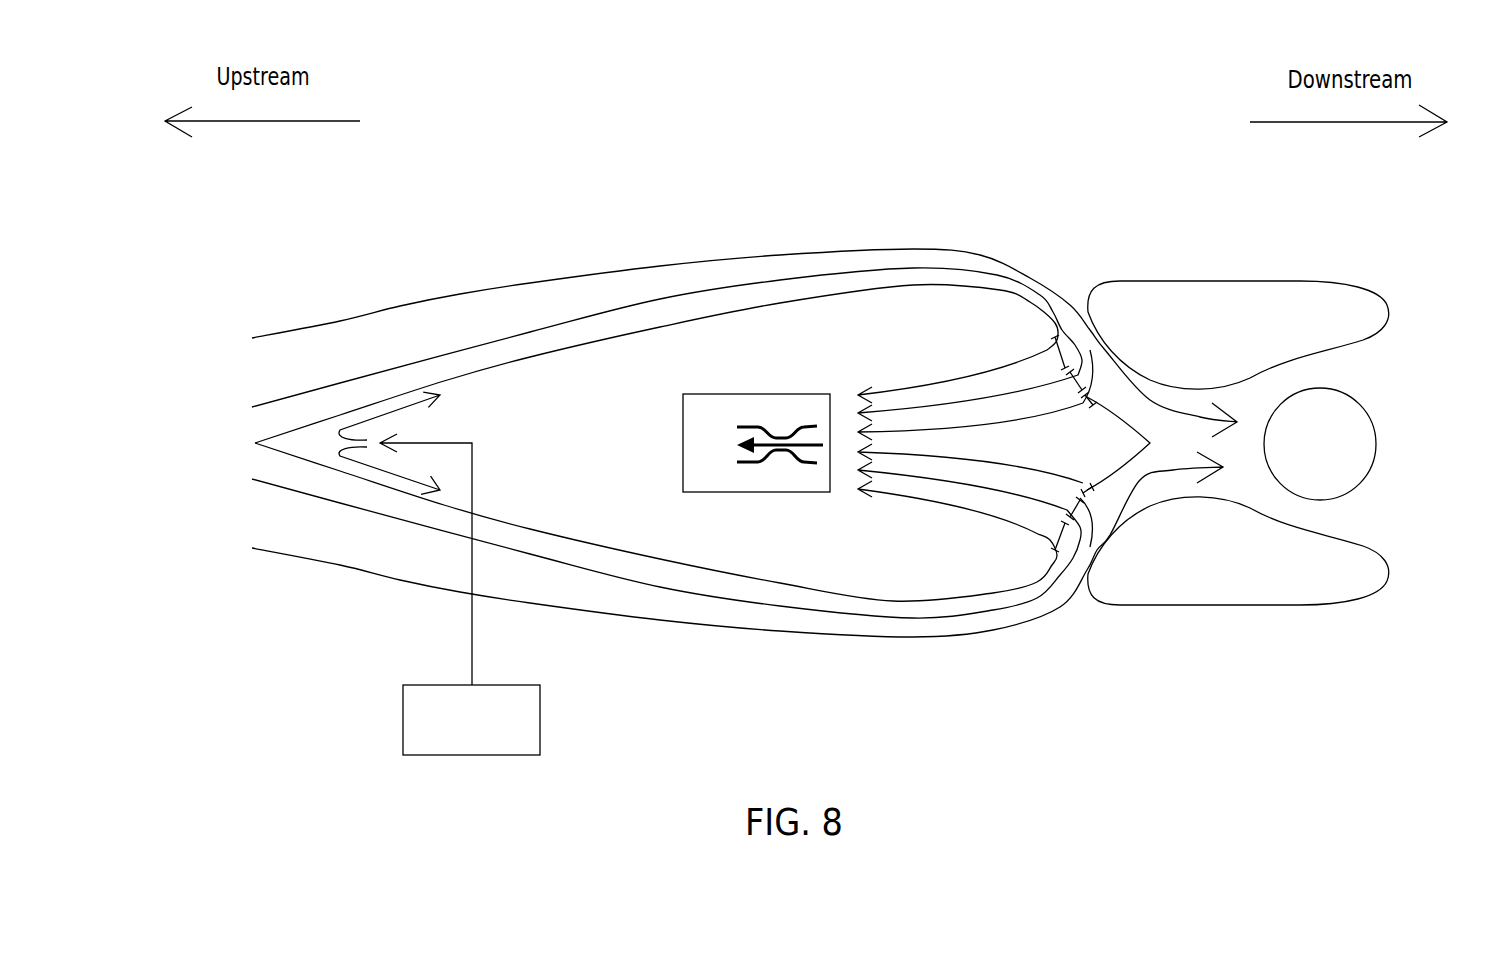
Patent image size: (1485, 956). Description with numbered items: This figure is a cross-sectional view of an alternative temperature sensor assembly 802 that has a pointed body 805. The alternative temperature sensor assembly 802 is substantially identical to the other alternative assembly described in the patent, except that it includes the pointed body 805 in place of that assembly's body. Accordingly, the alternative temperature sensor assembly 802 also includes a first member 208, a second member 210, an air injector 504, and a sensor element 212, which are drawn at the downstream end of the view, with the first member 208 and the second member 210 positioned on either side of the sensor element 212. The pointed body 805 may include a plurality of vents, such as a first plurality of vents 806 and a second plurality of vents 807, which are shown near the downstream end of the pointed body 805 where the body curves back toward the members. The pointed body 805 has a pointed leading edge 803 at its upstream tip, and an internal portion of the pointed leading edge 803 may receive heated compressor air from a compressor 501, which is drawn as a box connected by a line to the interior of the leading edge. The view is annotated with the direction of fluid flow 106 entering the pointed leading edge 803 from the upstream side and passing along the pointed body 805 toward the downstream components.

The alternative temperature sensor assembly 802 is at (1018, 112).
The pointed leading edge 803 is at (257, 440).
The pointed body 805 is at (925, 336).
The first plurality of vents 806 is at (1072, 390).
The second plurality of vents 807 is at (1072, 493).
The first member 208 is at (1232, 338).
The second member 210 is at (1194, 569).
The sensor element 212 is at (1302, 457).
The air injector 504 is at (723, 455).
The compressor 501 is at (490, 718).
The fluid flow 106 is at (286, 443).